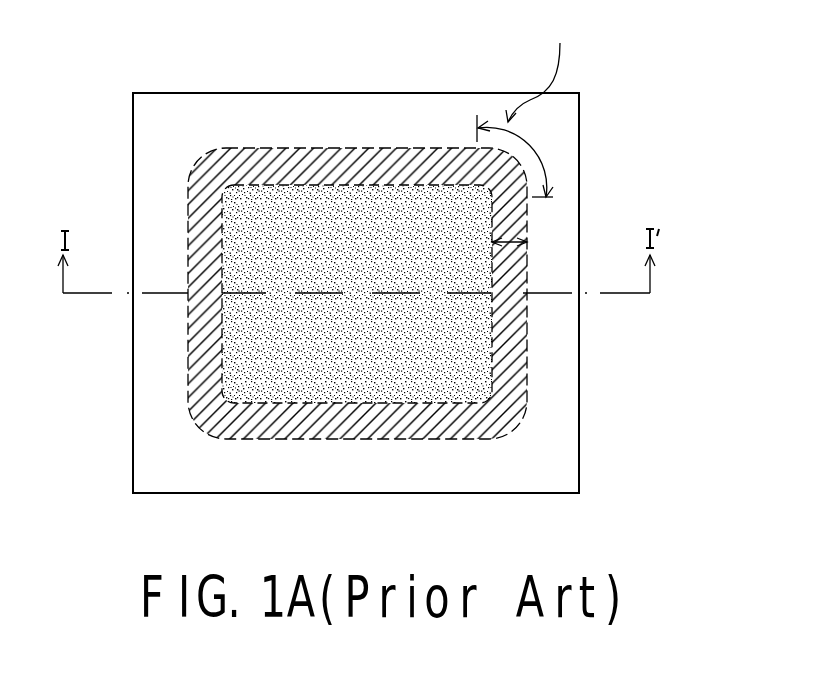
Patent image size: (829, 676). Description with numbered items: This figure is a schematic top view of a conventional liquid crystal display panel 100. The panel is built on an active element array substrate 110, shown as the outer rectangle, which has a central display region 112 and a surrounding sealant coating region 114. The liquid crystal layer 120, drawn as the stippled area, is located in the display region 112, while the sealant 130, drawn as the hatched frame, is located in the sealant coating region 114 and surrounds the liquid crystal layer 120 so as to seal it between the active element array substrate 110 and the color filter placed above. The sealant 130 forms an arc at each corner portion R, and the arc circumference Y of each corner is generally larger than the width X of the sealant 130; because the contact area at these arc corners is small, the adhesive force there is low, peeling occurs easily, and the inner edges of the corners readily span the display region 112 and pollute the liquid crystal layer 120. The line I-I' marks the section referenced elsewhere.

The liquid crystal display panel 100 is at (372, 267).
The active element array substrate 110 is at (579, 128).
The display region 112 is at (492, 353).
The sealant coating region 114 is at (287, 244).
The liquid crystal layer 120 is at (436, 212).
The sealant 130 is at (193, 202).